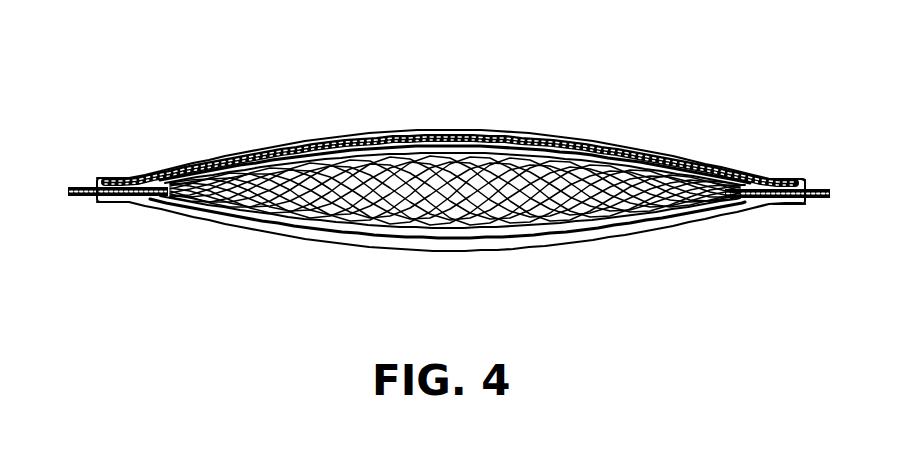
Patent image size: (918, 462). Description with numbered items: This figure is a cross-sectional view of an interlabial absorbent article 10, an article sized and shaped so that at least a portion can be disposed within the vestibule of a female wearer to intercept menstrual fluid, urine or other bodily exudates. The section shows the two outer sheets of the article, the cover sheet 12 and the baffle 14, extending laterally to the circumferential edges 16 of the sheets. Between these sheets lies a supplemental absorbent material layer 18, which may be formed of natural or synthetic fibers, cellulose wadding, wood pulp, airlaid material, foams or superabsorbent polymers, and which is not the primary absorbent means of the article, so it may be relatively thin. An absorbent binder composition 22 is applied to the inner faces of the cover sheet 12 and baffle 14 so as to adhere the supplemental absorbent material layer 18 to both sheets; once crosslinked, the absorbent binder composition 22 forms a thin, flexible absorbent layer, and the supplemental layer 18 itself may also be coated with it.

The interlabial absorbent article 10 is at (449, 201).
The cover sheet 12 is at (446, 129).
The baffle 14 is at (633, 222).
The circumferential edges 16 is at (98, 201).
The supplemental absorbent material layer 18 is at (435, 205).
The absorbent binder composition 22 is at (96, 183).